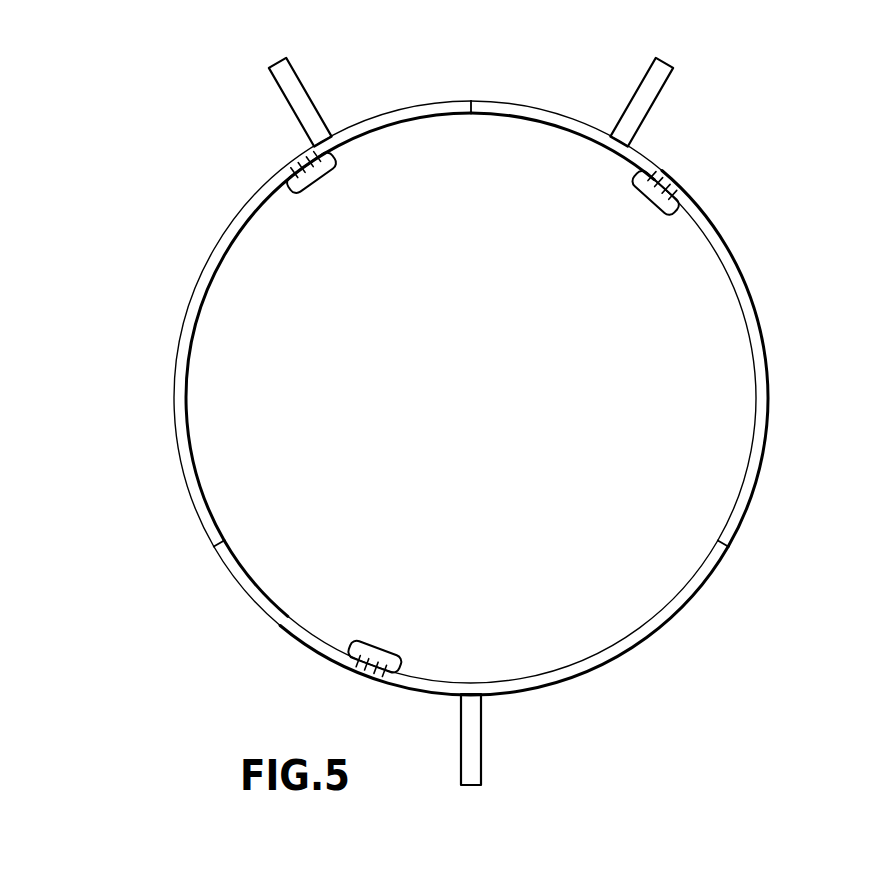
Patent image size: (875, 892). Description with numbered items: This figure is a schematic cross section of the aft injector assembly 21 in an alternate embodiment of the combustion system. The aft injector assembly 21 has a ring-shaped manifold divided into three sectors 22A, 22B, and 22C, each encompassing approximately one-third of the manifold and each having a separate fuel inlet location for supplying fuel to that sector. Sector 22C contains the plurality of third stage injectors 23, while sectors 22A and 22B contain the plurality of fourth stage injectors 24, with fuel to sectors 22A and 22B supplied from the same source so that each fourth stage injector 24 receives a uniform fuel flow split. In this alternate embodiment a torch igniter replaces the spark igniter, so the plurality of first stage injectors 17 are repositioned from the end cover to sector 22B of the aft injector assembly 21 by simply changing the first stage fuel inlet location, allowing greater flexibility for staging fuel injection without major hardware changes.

The aft injector assembly 21 is at (481, 421).
The sector 22A is at (243, 215).
The sector 22B is at (739, 263).
The sector 22C is at (560, 672).
The first stage injectors 17 is at (632, 208).
The third stage injectors 23 is at (388, 646).
The fourth stage injectors 24 is at (331, 198).